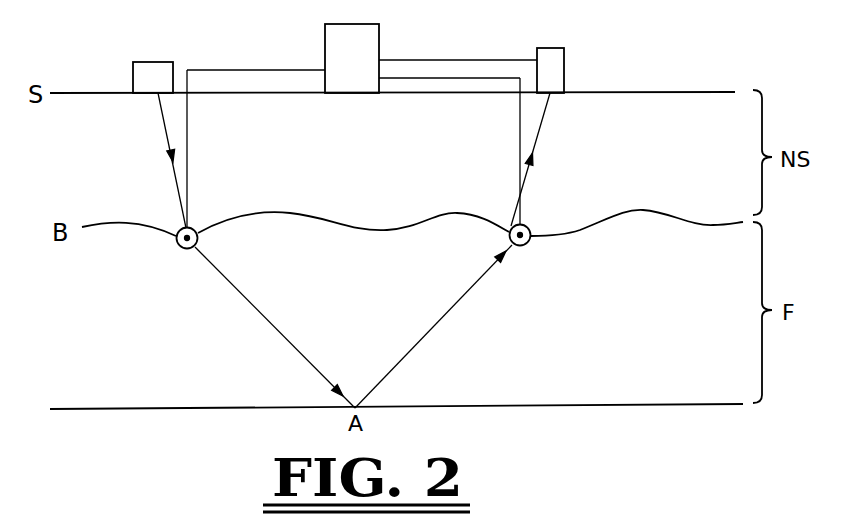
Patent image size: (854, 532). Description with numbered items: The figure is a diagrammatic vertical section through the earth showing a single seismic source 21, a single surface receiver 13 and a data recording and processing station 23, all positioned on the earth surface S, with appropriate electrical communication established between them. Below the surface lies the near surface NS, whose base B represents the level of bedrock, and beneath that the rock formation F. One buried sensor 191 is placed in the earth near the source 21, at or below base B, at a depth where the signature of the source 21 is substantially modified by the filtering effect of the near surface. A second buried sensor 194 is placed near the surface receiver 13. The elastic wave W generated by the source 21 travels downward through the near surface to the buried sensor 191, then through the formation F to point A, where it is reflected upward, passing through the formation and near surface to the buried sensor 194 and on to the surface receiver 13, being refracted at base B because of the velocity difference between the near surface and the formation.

The seismic source 21 is at (155, 62).
The data recording and processing station 23 is at (379, 33).
The surface receiver 13 is at (564, 53).
The buried sensor 191 is at (197, 226).
The buried sensor 194 is at (527, 246).